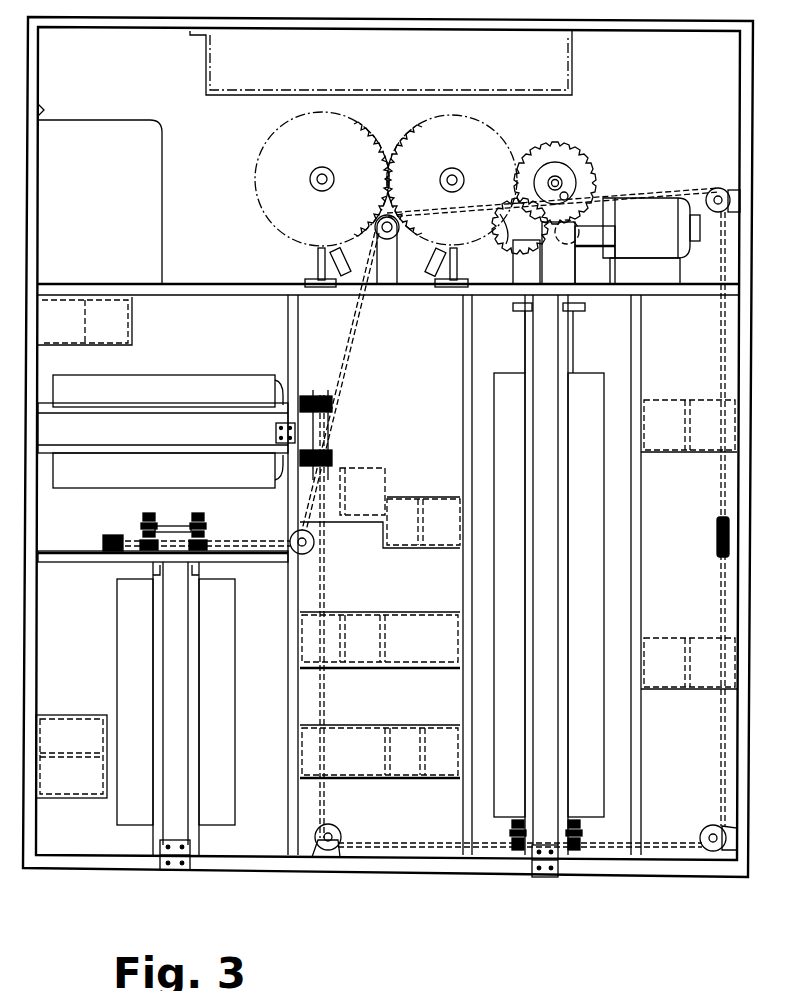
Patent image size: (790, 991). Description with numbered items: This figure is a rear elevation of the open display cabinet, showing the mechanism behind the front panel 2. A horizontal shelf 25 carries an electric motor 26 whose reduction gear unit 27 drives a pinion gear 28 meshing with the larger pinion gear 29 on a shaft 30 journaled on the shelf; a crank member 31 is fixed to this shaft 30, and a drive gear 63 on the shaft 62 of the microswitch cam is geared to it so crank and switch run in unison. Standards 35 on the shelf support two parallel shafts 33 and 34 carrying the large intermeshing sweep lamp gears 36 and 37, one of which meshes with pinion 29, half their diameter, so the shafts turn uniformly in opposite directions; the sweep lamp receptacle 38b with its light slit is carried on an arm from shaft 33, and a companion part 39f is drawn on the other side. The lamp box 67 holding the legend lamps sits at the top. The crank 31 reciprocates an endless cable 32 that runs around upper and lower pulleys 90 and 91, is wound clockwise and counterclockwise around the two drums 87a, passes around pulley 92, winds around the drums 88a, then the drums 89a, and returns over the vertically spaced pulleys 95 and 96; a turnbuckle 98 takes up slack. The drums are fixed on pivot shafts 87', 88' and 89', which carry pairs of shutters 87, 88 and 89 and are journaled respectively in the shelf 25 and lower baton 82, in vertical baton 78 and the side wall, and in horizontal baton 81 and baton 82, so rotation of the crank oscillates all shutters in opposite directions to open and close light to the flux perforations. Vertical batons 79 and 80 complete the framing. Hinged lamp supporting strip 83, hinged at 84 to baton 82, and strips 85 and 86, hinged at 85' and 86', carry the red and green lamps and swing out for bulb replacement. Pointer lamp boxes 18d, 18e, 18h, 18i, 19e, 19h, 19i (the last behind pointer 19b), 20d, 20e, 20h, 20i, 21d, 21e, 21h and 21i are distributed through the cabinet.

The front panel 2 is at (665, 45).
The horizontal shelf 25 is at (226, 292).
The lamp box 67 is at (574, 67).
The sweep lamp gear 36 is at (290, 222).
The shaft 33 is at (334, 179).
The receptacle or cam 38b is at (328, 256).
The standard 35 is at (317, 262).
The bracket 39f is at (445, 265).
The shaft 34 is at (440, 180).
The pulley 96 is at (400, 219).
The pinion gear 29 is at (560, 156).
The shaft 30 is at (566, 176).
The crank member 31 is at (574, 192).
The shaft 62 is at (506, 224).
The sweep lamp gear 37 is at (509, 238).
The reduction gear unit 27 is at (585, 251).
The drive gear 63 is at (519, 262).
The pinion gear 28 is at (560, 250).
The electric motor 26 is at (657, 233).
The cable 32 is at (692, 188).
The pulley 90 is at (720, 188).
The turnbuckle 98 is at (715, 550).
The pulley 91 is at (708, 828).
The vertical baton 78 is at (298, 328).
The vertical baton 79 is at (463, 328).
The vertical baton 80 is at (641, 529).
The lamp box 20h is at (60, 300).
The lamp box 20i is at (108, 300).
The shutter 88 is at (164, 435).
The pivot shaft 88' is at (266, 443).
The hinged strip 85 is at (163, 428).
The hinge 85' is at (265, 434).
The cable drum 88a is at (335, 456).
The lamp box 20d is at (338, 470).
The lamp box 20e is at (385, 482).
The lamp box 18i is at (397, 546).
The lamp box 18h is at (441, 546).
The pulley 95 is at (316, 546).
The horizontal baton 81 is at (55, 556).
The cable drum 89a is at (176, 522).
The shutter 89 is at (166, 702).
The pivot shaft 89' is at (209, 708).
The hinged strip 86 is at (175, 703).
The hinge 86' is at (181, 867).
The lamp box 21i is at (92, 724).
The lamp box 21h is at (68, 790).
The lamp box 21d is at (333, 618).
The lamp box 21e is at (358, 660).
The lamp box 19h is at (401, 778).
The lamp box 19i is at (441, 778).
The pulley 92 is at (340, 831).
The horizontal baton 82 is at (328, 864).
The pivot shaft 87' is at (554, 338).
The shutter 87 is at (551, 585).
The supporting strip 83 is at (555, 668).
The cable drum 87a is at (510, 832).
The hinge 84 is at (544, 878).
The lamp box 18e is at (661, 400).
The lamp box 18d is at (700, 400).
The pointer 19b is at (661, 638).
The lamp box 19e is at (700, 640).